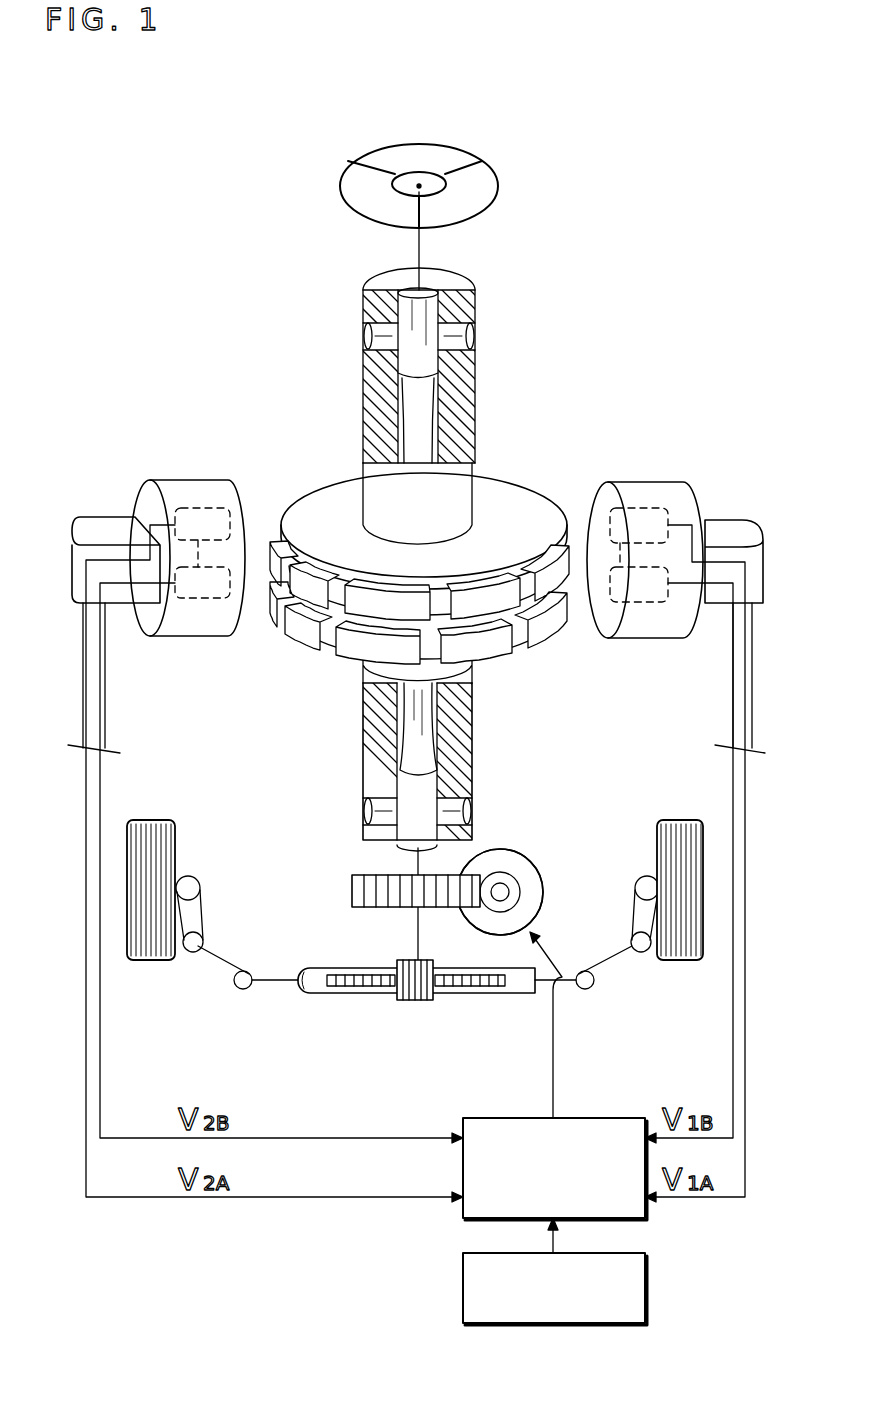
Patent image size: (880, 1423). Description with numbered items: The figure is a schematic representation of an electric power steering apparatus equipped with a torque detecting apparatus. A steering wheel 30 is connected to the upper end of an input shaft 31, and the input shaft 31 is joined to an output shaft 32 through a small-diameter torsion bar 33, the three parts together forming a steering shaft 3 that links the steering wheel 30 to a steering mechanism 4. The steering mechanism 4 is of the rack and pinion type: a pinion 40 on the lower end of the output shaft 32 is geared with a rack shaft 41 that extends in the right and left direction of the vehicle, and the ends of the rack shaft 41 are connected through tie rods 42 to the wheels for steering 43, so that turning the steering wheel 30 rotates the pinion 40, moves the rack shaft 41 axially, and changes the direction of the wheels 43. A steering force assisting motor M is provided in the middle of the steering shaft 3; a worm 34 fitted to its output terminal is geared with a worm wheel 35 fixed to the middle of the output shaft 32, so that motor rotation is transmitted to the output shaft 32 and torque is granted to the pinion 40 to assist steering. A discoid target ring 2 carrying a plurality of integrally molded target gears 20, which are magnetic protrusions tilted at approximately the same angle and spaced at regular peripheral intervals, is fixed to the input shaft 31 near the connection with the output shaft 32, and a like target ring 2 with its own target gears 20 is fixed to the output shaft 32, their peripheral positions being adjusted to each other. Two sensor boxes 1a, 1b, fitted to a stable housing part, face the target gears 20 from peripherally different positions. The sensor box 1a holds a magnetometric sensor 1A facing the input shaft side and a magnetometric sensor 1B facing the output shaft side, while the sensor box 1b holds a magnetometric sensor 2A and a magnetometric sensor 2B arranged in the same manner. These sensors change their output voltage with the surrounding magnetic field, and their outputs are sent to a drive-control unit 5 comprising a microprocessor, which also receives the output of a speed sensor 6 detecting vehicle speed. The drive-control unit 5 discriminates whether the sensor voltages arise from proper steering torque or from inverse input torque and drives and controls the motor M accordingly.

The steering wheel 30 is at (500, 192).
The steering shaft 3 is at (487, 341).
The input shaft 31 is at (470, 383).
The output shaft 32 is at (470, 764).
The torsion bar 33 is at (408, 404).
The target ring 2 is at (322, 492).
The target gears 20 is at (515, 600).
The sensor box 1a is at (678, 485).
The magnetometric sensor 1A is at (622, 508).
The magnetometric sensor 1B is at (620, 602).
The sensor box 1b is at (175, 490).
The magnetometric sensor 2A is at (198, 508).
The magnetometric sensor 2B is at (198, 598).
The worm 34 is at (540, 890).
The steering force assisting motor M is at (516, 856).
The worm wheel 35 is at (352, 882).
The steering mechanism 4 is at (352, 995).
The pinion 40 is at (410, 1003).
The rack shaft 41 is at (487, 995).
The tie rods 42 is at (225, 968).
The wheels for steering 43 is at (150, 820).
The drive-control unit 5 is at (588, 1118).
The speed sensor 6 is at (648, 1282).